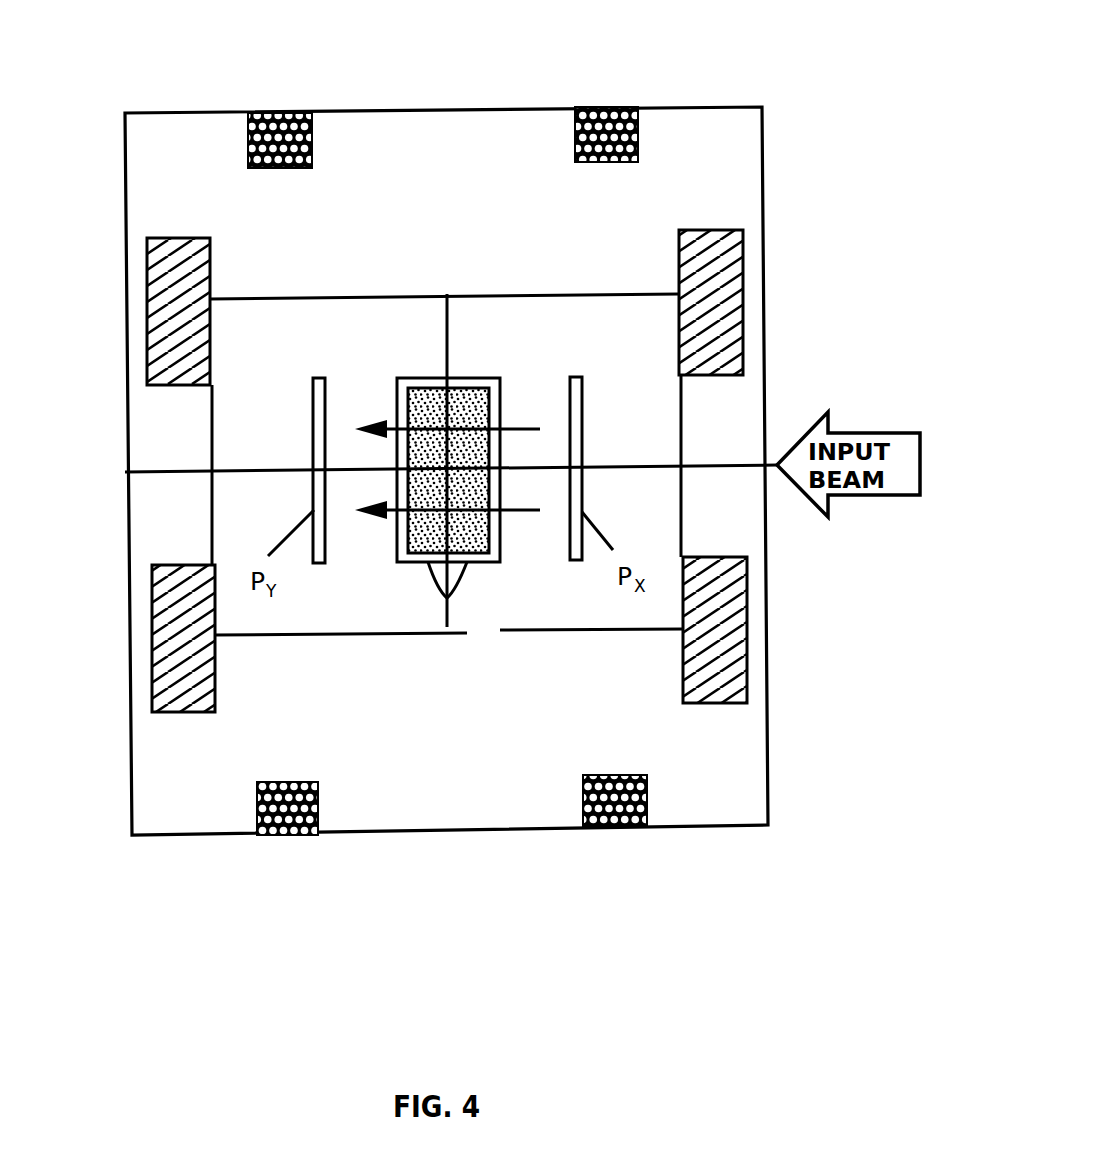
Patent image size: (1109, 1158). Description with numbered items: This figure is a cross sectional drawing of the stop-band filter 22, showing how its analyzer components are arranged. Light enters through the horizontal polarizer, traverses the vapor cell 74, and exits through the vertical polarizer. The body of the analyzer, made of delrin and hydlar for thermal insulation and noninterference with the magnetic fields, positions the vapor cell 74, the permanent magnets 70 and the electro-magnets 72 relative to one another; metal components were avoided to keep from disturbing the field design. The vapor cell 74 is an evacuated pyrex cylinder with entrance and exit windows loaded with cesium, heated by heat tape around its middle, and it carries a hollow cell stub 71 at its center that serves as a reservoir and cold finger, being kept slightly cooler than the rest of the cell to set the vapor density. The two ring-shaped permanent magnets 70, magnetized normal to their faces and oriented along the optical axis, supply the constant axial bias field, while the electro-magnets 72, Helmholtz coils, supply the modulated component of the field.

The filter 22 is at (703, 90).
The permanent magnets 70 is at (178, 712).
The electro-magnets 72 is at (297, 838).
The vapor cell 74 is at (502, 377).
The cell stub 71 is at (448, 598).